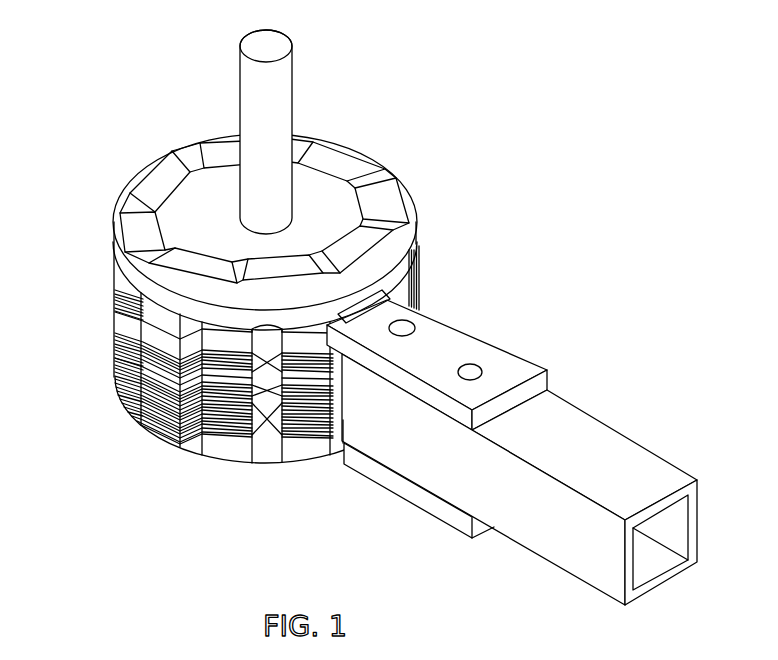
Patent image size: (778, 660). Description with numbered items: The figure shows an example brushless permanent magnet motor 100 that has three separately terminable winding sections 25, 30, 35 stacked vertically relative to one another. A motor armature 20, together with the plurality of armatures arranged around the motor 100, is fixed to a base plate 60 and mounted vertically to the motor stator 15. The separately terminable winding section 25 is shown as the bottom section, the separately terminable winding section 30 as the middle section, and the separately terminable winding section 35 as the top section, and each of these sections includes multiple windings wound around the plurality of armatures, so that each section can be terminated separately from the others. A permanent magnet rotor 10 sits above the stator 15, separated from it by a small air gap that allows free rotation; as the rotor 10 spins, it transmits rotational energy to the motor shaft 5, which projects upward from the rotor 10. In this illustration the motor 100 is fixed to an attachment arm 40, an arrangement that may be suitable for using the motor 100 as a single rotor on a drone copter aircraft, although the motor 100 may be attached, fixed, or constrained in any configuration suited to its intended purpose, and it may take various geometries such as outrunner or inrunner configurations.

The brushless permanent magnet motor 100 is at (359, 306).
The motor shaft 5 is at (275, 88).
The permanent magnet rotor 10 is at (327, 213).
The motor stator 15 is at (430, 333).
The motor armature 20 is at (350, 420).
The separately terminable winding section 25 is at (155, 412).
The separately terminable winding section 30 is at (120, 382).
The separately terminable winding section 35 is at (110, 325).
The attachment arm 40 is at (578, 442).
The base plate 60 is at (300, 453).